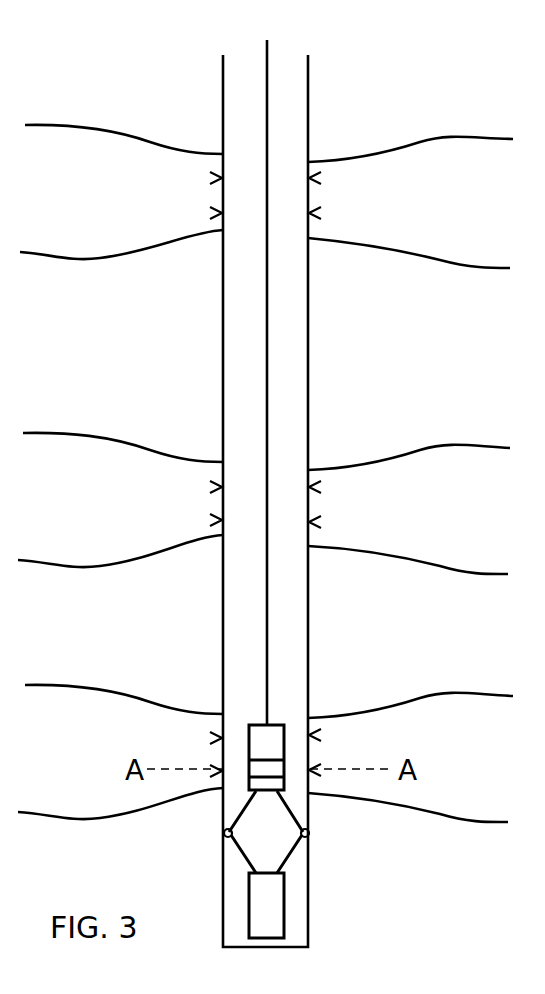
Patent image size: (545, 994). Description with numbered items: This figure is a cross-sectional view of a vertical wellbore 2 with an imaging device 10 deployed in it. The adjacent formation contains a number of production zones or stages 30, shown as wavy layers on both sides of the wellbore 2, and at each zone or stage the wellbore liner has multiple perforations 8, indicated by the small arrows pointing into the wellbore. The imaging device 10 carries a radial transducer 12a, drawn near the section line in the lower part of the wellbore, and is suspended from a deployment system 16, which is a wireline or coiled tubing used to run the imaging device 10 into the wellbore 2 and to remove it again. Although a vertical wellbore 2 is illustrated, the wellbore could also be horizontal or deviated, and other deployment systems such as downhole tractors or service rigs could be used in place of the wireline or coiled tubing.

The wellbore 2 is at (310, 368).
The deployment system 16 is at (266, 332).
The production zones or stages 30 is at (480, 137).
The perforations 8 is at (318, 523).
The radial transducer 12a is at (282, 762).
The imaging device 10 is at (312, 792).